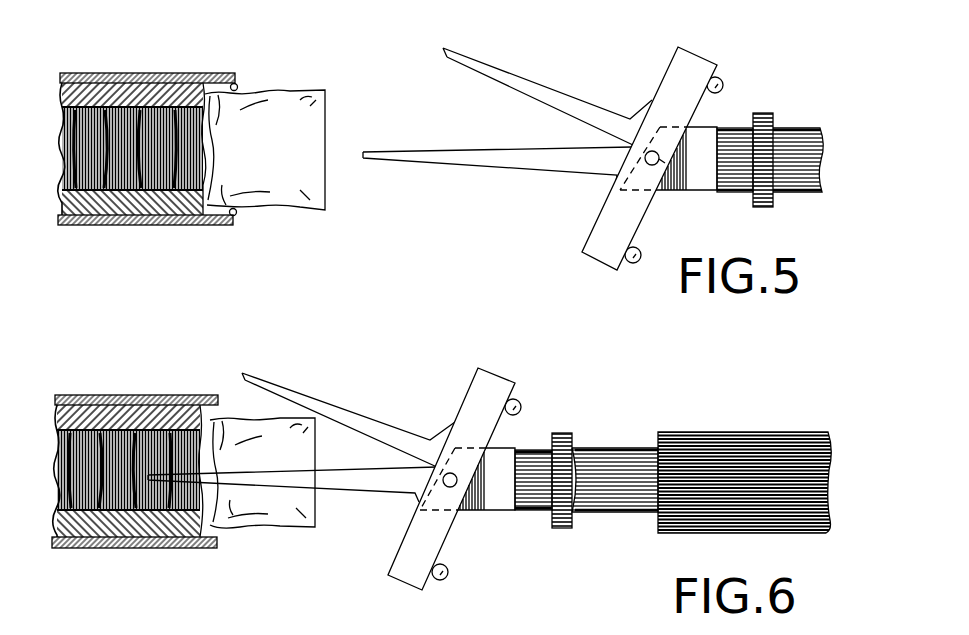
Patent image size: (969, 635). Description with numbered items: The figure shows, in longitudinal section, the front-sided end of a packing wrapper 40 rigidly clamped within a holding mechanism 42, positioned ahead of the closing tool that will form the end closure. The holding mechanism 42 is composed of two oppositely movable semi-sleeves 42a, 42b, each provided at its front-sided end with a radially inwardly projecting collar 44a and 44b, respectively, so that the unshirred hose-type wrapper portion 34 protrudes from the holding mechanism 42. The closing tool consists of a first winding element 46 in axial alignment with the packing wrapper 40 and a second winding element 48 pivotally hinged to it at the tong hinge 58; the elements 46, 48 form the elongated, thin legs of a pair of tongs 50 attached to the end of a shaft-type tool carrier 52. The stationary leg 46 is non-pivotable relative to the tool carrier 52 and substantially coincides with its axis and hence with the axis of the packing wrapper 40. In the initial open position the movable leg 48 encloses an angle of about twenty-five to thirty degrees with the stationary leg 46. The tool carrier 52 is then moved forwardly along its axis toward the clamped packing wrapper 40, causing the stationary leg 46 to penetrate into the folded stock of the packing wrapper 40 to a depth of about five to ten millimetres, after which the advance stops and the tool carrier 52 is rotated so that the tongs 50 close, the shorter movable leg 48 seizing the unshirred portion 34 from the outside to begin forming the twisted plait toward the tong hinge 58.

In FIG. 5, the unshirred hose-type wrapper portion 34 is at (321, 112).
In FIG. 6, the unshirred hose-type wrapper portion 34 is at (270, 525).
In FIG. 5, the packing wrapper 40 is at (80, 227).
In FIG. 6, the packing wrapper 40 is at (75, 549).
In FIG. 5, the holding mechanism 42 is at (184, 68).
In FIG. 6, the holding mechanism 42 is at (138, 388).
In FIG. 5, the semi-sleeve 42a is at (118, 72).
In FIG. 5, the semi-sleeve 42b is at (158, 227).
In FIG. 5, the radially inwardly projecting collar 44a is at (238, 86).
In FIG. 5, the radially inwardly projecting collar 44b is at (236, 214).
In FIG. 5, the first winding element 46 is at (465, 160).
In FIG. 6, the first winding element 46 is at (346, 490).
In FIG. 5, the second winding element 48 is at (508, 77).
In FIG. 6, the second winding element 48 is at (341, 406).
In FIG. 5, the pair of tongs 50 is at (733, 119).
In FIG. 6, the pair of tongs 50 is at (536, 441).
In FIG. 6, the shaft-type tool carrier 52 is at (737, 436).
In FIG. 5, the tong hinge 58 is at (670, 190).